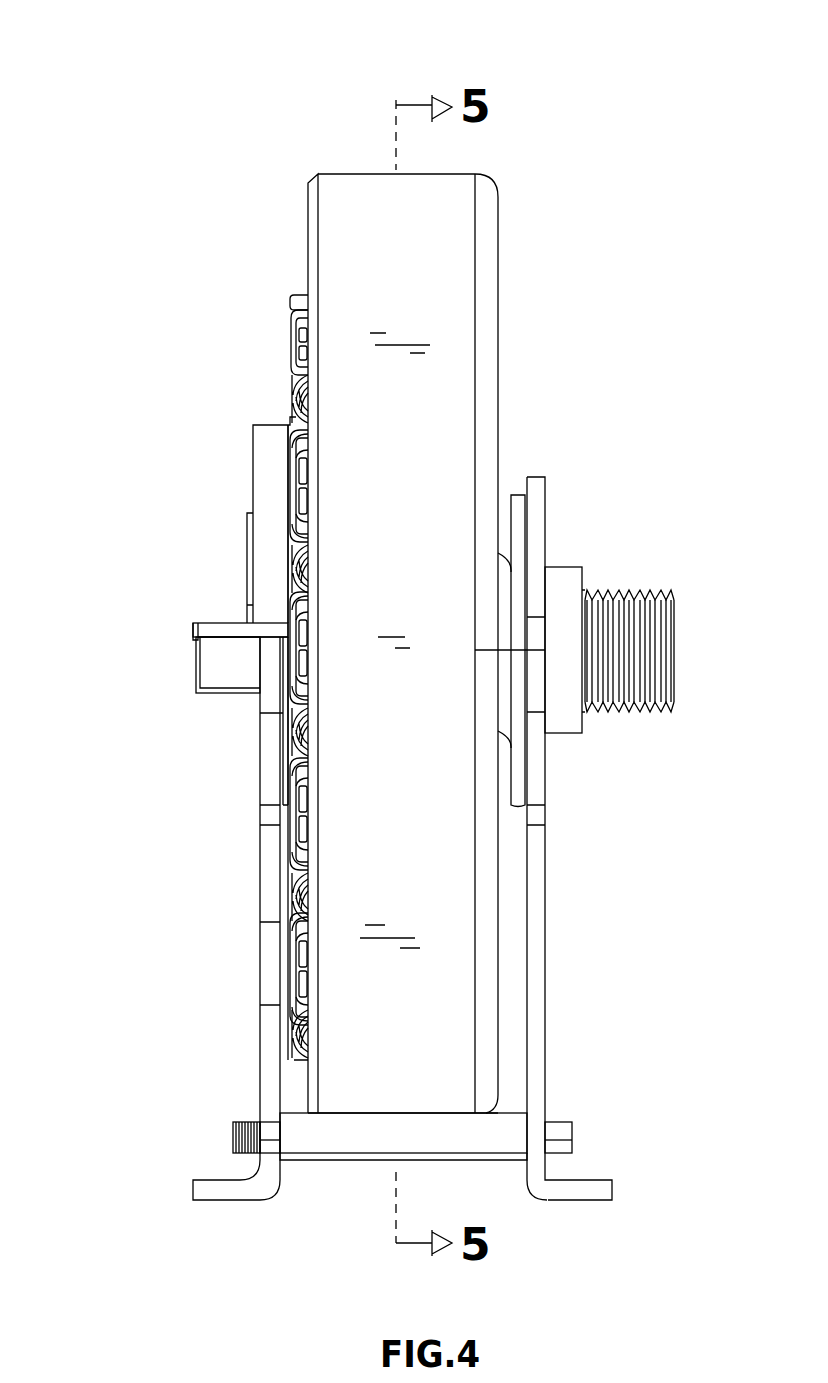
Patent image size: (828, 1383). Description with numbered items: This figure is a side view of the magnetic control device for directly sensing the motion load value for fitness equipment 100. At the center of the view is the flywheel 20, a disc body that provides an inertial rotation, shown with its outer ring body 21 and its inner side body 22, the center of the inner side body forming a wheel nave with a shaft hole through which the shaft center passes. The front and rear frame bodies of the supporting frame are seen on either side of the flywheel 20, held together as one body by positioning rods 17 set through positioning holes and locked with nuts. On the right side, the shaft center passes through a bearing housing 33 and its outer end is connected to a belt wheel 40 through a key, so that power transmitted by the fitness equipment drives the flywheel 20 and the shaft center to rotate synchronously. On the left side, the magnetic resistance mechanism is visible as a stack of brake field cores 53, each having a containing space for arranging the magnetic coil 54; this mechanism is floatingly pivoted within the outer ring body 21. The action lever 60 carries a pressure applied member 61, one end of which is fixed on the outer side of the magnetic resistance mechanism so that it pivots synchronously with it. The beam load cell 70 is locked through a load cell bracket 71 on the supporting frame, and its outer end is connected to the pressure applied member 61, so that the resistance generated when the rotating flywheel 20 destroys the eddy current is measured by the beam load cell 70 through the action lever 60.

The fitness equipment 100 is at (87, 20).
The positioning rods 17 is at (331, 1140).
The flywheel 20 is at (522, 312).
The outer ring body 21 is at (455, 259).
The inner side body 22 is at (500, 371).
The bearing housing 33 is at (566, 578).
The belt wheel 40 is at (651, 598).
The brake field cores 53 is at (302, 333).
The magnetic coil 54 is at (302, 380).
The action lever 60 is at (266, 470).
The pressure applied member 61 is at (216, 629).
The beam load cell 70 is at (206, 679).
The load cell bracket 71 is at (251, 548).